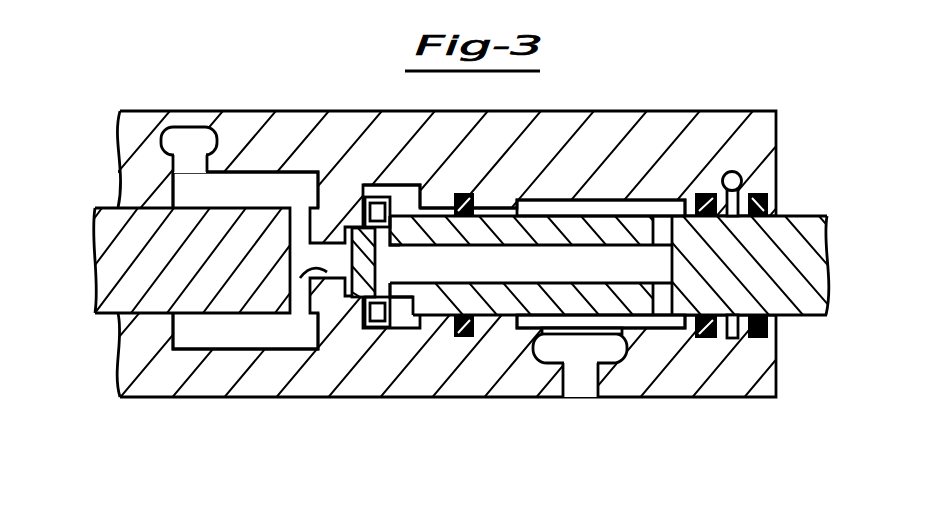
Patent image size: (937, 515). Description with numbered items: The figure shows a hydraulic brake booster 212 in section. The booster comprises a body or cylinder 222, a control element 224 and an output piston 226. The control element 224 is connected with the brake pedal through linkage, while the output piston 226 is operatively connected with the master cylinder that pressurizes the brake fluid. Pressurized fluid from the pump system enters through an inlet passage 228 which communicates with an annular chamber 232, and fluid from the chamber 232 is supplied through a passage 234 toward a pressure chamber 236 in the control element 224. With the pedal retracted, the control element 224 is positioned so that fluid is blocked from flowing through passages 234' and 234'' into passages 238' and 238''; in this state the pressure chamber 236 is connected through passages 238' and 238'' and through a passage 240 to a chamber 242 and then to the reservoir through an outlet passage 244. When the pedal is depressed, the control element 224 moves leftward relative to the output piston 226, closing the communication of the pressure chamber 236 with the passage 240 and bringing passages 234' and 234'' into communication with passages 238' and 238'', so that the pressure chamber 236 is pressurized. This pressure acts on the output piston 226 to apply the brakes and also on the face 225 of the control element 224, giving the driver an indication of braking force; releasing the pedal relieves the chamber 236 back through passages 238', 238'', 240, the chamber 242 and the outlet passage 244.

The hydraulic booster 212 is at (640, 95).
The body or cylinder 222 is at (440, 170).
The control element 224 is at (797, 215).
The face 225 is at (384, 345).
The output piston 226 is at (323, 355).
The inlet passage 228 is at (598, 358).
The annular chamber 232 is at (598, 207).
The passage 234 is at (454, 334).
The passage 234' is at (422, 163).
The passage 234'' is at (455, 276).
The pressure chamber 236 is at (428, 192).
The passage 238' is at (376, 141).
The passage 238'' is at (338, 384).
The passage 240 is at (290, 306).
The chamber 242 is at (258, 178).
The outlet passage 244 is at (187, 132).